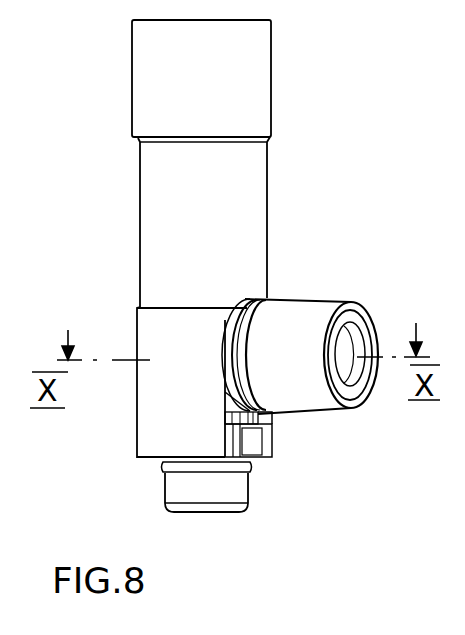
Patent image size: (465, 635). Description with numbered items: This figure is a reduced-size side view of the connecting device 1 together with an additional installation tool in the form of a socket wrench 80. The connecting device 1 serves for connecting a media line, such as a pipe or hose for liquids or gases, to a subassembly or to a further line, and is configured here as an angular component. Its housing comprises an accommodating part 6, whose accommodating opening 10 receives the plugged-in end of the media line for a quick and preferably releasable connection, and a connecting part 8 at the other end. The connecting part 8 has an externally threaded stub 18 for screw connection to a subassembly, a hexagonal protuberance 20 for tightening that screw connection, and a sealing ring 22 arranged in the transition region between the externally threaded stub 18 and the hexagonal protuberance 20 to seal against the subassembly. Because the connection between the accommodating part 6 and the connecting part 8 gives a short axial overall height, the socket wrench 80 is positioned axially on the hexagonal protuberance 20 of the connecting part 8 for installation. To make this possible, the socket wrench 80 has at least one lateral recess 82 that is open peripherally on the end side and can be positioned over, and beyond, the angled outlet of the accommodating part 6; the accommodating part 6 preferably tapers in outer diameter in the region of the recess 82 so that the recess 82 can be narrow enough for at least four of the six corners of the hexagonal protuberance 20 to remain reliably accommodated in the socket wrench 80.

The connecting device 1 is at (310, 293).
The accommodating part 6 is at (264, 342).
The connecting part 8 is at (253, 457).
The accommodating opening 10 is at (343, 348).
The externally threaded stub 18 is at (200, 492).
The hexagonal protuberance 20 is at (248, 440).
The sealing ring 22 is at (165, 465).
The socket wrench 80 is at (263, 92).
The lateral recess 82 is at (223, 386).